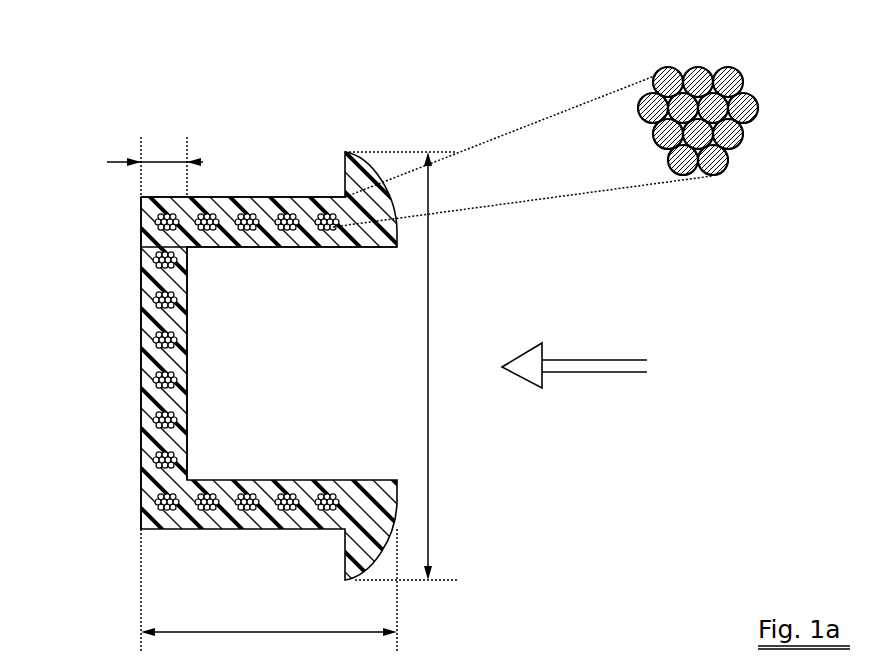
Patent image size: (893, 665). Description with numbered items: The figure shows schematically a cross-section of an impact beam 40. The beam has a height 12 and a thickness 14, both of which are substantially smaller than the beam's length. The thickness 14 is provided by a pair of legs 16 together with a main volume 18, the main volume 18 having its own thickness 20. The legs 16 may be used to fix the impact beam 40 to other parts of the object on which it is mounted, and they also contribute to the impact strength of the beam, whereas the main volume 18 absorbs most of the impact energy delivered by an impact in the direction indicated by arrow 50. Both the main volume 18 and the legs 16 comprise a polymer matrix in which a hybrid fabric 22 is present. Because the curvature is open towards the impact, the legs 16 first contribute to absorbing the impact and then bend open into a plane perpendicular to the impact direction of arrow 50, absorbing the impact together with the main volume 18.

The impact beam 40 is at (138, 80).
The legs 16 is at (272, 230).
The main volume 18 is at (140, 385).
The hybrid fabric 22 is at (285, 215).
The height 12 is at (409, 366).
The thickness 14 is at (269, 590).
The thickness of the main volume 20 is at (155, 163).
The arrow indicating impact direction 50 is at (598, 365).